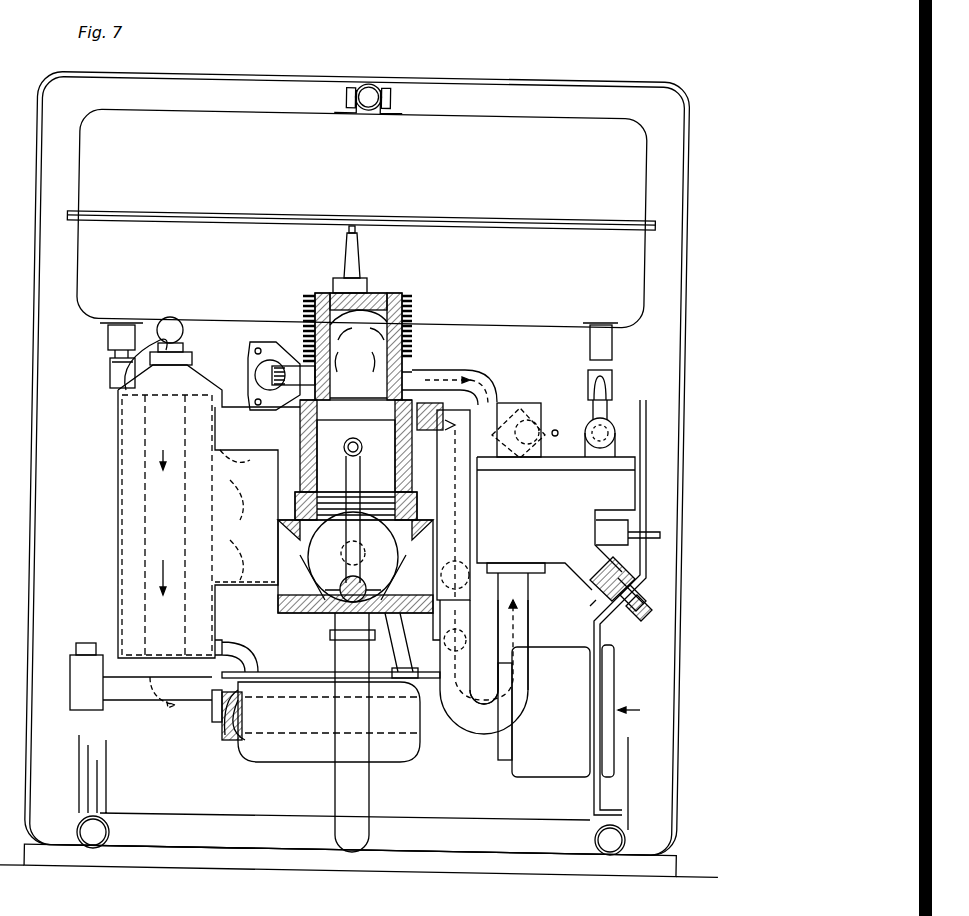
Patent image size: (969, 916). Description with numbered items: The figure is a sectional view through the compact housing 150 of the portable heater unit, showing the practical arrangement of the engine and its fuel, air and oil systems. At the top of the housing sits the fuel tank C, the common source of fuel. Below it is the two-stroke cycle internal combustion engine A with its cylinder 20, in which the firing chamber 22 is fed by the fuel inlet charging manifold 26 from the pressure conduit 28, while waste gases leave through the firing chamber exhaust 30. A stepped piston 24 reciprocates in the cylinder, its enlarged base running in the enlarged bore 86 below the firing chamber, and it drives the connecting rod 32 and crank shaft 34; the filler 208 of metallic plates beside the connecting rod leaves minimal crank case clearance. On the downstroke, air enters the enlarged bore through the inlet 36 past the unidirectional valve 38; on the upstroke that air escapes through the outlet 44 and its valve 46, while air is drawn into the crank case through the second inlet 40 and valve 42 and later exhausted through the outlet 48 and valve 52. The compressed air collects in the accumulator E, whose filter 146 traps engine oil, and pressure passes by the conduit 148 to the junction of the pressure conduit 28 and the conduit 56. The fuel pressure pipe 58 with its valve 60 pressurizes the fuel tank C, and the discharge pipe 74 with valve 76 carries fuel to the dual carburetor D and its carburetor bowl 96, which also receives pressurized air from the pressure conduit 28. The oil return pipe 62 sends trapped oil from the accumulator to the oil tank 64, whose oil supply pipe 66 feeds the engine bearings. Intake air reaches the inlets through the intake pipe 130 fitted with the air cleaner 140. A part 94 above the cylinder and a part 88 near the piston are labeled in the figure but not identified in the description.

The housing 150 is at (605, 78).
The fuel tank C is at (136, 110).
The spark plug 94 is at (344, 256).
The internal combustion engine A is at (357, 375).
The cylinder 20 is at (388, 292).
The firing chamber 22 is at (412, 332).
The firing chamber exhaust 30 is at (268, 372).
The fuel inlet charging manifold 26 is at (404, 378).
The pressure conduit 28 is at (455, 366).
The discharge pipe 74 is at (612, 348).
The valve 76 is at (612, 380).
The conduit 56 is at (540, 424).
The piston 24 is at (346, 452).
The unidirectional valve 38 is at (444, 412).
The fuel pressure pipe 58 is at (106, 340).
The valve 60 is at (108, 382).
The accumulator E is at (181, 487).
The carburetor D is at (571, 501).
The outlet 44 is at (236, 464).
The valve 46 is at (306, 462).
The enlarged bore 86 is at (312, 482).
The piston rings 88 is at (300, 502).
The inlet 36 is at (446, 470).
The filter 146 is at (130, 496).
The connecting rod 32 is at (352, 548).
The crank shaft 34 is at (353, 557).
The outlet 48 is at (243, 588).
The unidirectional valve 52 is at (338, 544).
The filler 208 is at (330, 616).
The unidirectional valve 42 is at (432, 620).
The second inlet 40 is at (466, 598).
The carburetor bowl 96 is at (566, 578).
The conduit 148 is at (532, 628).
The intake pipe 130 is at (468, 684).
The oil return pipe 62 is at (252, 658).
The oil supply pipe 66 is at (404, 660).
The oil tank 64 is at (308, 756).
The air cleaner 140 is at (544, 778).